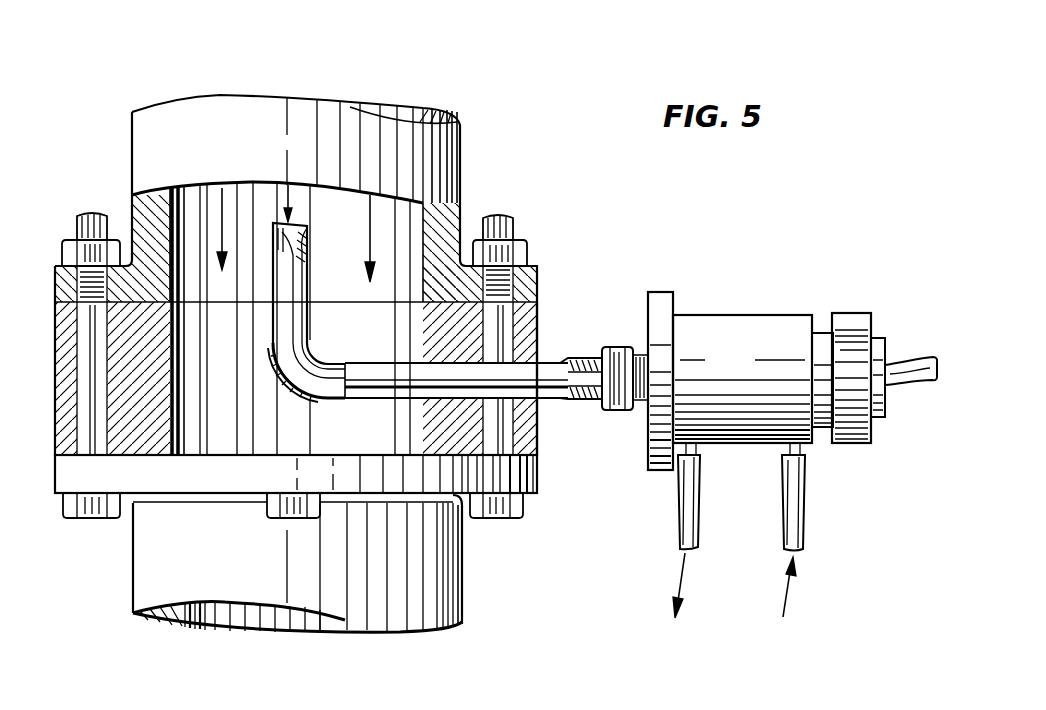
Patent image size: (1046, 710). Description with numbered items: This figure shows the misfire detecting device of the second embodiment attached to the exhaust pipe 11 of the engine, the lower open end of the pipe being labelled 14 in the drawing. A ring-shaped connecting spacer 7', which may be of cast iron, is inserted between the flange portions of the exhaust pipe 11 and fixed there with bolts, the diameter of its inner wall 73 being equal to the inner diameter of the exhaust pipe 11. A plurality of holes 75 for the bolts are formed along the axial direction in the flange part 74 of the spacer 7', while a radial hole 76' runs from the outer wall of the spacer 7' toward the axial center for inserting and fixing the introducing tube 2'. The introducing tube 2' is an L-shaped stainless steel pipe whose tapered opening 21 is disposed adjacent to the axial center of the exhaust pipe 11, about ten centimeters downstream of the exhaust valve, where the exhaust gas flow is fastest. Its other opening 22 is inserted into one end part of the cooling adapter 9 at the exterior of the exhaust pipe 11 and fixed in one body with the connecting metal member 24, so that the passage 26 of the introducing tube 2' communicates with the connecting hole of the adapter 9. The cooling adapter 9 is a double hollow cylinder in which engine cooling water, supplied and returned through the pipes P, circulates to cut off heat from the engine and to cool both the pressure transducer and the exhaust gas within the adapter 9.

The exhaust pipe 11 is at (463, 132).
The pipe opening 14 is at (227, 617).
The opening 21 is at (286, 234).
The passage 26 is at (313, 363).
The introducing tube 2' is at (456, 362).
The opening 22 is at (580, 386).
The connecting metal member 24 is at (618, 347).
The cooling adapter 9 is at (708, 326).
The holes 75 is at (90, 360).
The inner wall 73 is at (183, 378).
The connecting spacer 7' is at (296, 325).
The hole 76' is at (559, 381).
The flange part 74 is at (537, 477).
The pipes P is at (682, 503).